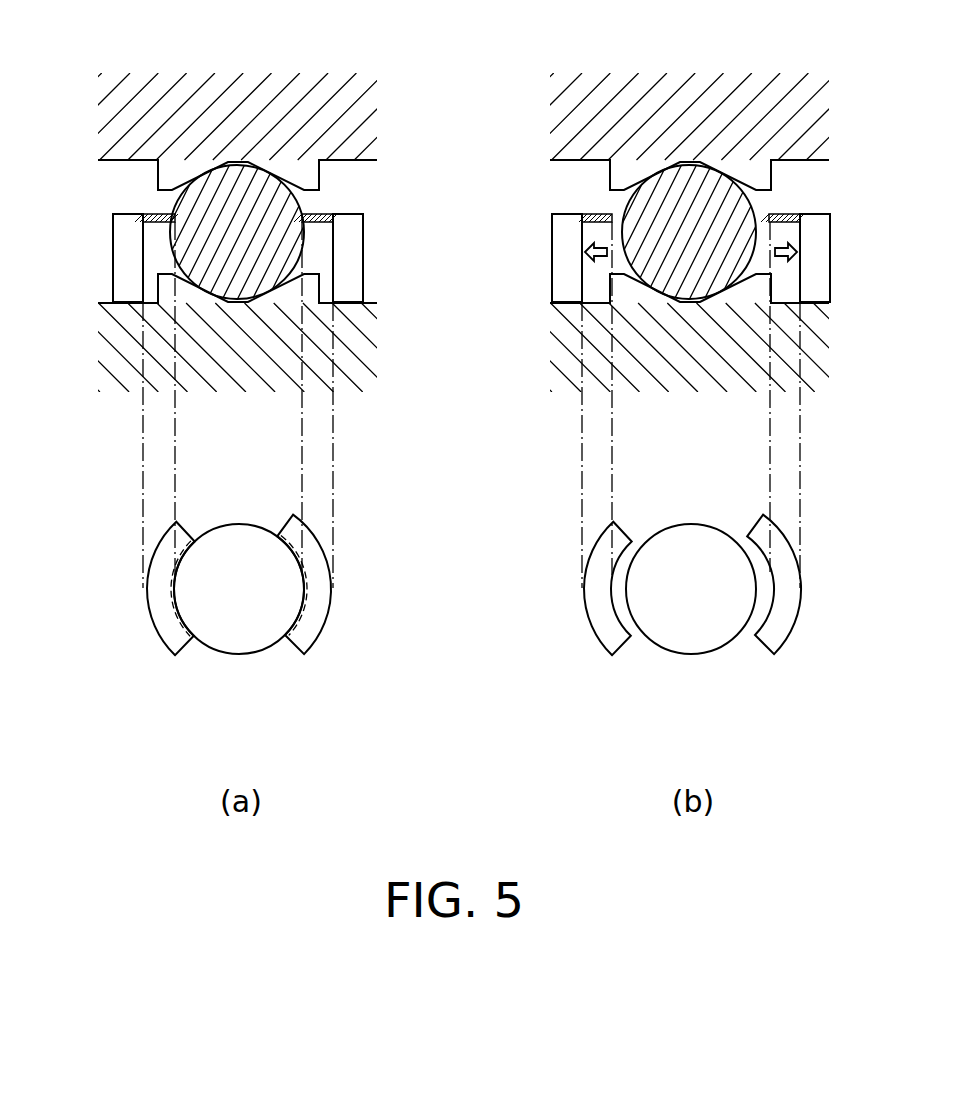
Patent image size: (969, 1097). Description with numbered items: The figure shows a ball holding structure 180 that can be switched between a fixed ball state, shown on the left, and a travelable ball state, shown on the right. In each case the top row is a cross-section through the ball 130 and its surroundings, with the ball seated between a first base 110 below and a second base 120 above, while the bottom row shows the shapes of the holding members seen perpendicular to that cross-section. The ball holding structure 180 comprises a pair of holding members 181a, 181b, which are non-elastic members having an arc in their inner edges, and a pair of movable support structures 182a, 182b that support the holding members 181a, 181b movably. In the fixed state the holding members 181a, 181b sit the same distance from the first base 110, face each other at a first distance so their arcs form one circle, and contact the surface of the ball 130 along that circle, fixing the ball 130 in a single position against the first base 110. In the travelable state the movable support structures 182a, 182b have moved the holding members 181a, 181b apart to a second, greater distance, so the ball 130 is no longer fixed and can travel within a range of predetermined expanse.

The first base 110 is at (238, 340).
The second base 120 is at (237, 127).
The ball 130 is at (207, 205).
The ball holding structure 180 is at (473, 432).
The holding member 181a is at (153, 213).
The holding member 181b is at (323, 213).
The movable support structure 182a is at (127, 263).
The movable support structure 182b is at (347, 268).